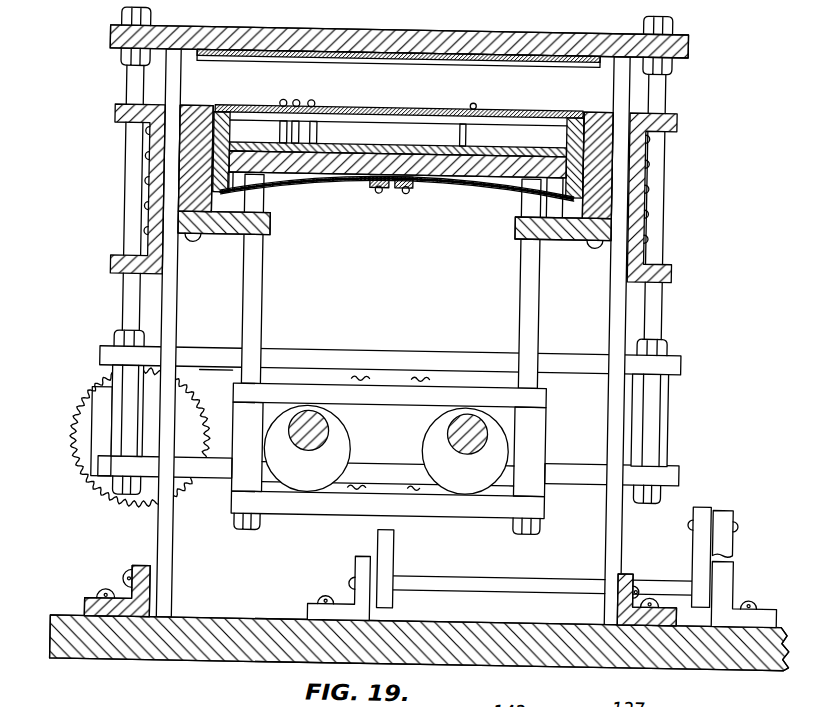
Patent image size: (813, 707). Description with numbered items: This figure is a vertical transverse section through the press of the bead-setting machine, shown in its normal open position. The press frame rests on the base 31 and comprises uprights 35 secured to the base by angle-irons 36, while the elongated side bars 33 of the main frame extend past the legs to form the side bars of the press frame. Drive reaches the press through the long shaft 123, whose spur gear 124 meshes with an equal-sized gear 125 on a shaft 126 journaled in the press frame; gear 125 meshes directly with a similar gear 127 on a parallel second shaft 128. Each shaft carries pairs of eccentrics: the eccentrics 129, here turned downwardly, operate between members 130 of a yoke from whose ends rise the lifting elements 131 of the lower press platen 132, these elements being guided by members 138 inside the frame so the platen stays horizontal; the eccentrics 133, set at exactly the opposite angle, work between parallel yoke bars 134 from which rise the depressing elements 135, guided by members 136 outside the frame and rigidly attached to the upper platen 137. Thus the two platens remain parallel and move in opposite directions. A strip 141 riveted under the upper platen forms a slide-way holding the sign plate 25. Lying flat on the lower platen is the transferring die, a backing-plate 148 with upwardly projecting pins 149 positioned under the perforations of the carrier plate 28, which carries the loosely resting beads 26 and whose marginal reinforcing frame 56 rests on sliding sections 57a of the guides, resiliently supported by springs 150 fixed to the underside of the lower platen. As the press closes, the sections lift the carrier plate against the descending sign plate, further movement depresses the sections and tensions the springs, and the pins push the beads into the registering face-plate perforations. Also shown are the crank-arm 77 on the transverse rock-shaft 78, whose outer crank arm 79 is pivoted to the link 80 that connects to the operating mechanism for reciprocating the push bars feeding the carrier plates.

The sign plate 25 is at (541, 62).
The beads 26 is at (308, 104).
The carrier plate 28 is at (426, 101).
The base 31 is at (87, 652).
The side bars 33 is at (185, 112).
The uprights 35 is at (171, 547).
The angle-irons 36 is at (134, 595).
The marginal reinforcing frame 56 is at (228, 111).
The sliding sections 57a is at (209, 139).
The crank-arm 77 is at (397, 555).
The rock-shaft 78 is at (554, 576).
The crank arm 79 is at (701, 535).
The link 80 is at (740, 523).
The long shaft 123 is at (151, 420).
The spur gear 124 is at (77, 425).
The gear 125 is at (387, 383).
The shaft 126 is at (320, 419).
The gear 127 is at (433, 384).
The second shaft 128 is at (448, 434).
The eccentrics 129 is at (507, 445).
The yoke members 130 is at (297, 377).
The lifting elements 131 is at (259, 276).
The lower press platen 132 is at (355, 180).
The eccentrics 133 is at (301, 387).
The yoke bars 134 is at (205, 343).
The depressing elements 135 is at (127, 302).
The guide members 136 is at (115, 263).
The upper platen 137 is at (672, 55).
The guide members 138 is at (268, 228).
The strip 141 is at (388, 62).
The backing-plate 148 is at (382, 152).
The pins 149 is at (276, 133).
The springs 150 is at (332, 195).